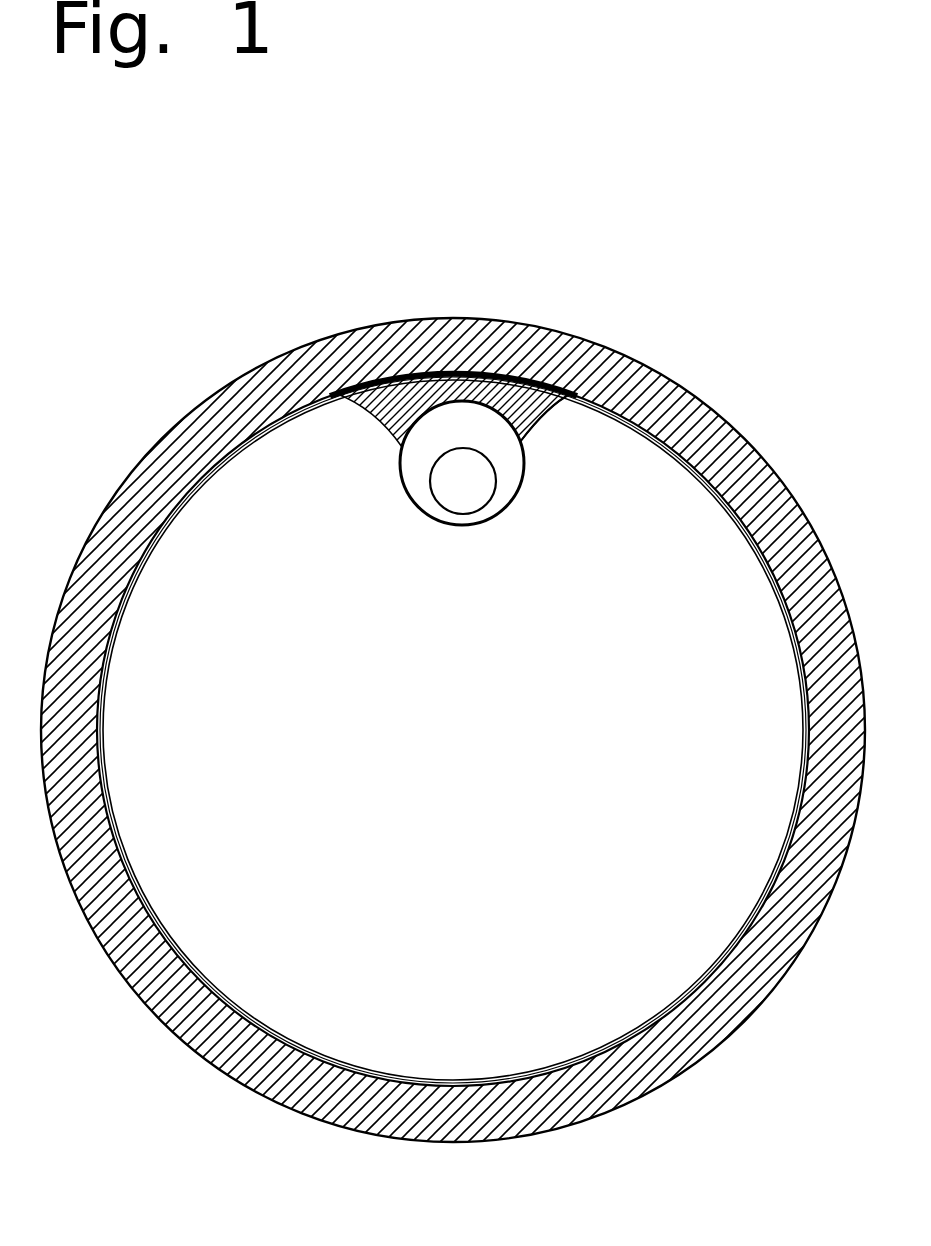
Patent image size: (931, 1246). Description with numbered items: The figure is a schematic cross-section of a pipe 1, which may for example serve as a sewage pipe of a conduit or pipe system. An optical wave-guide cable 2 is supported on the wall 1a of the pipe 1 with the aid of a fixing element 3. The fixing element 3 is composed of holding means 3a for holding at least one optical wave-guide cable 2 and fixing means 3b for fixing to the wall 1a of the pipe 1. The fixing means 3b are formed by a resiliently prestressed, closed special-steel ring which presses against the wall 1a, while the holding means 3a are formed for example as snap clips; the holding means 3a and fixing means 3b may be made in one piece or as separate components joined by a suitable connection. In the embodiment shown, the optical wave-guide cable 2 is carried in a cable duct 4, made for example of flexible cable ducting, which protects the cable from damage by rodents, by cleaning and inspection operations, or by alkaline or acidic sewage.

The pipe 1 is at (717, 442).
The wall 1a is at (237, 1013).
The optical wave-guide cable 2 is at (465, 492).
The fixing element 3 is at (382, 432).
The holding means 3a is at (537, 432).
The fixing means 3b is at (103, 765).
The cable duct 4 is at (453, 520).